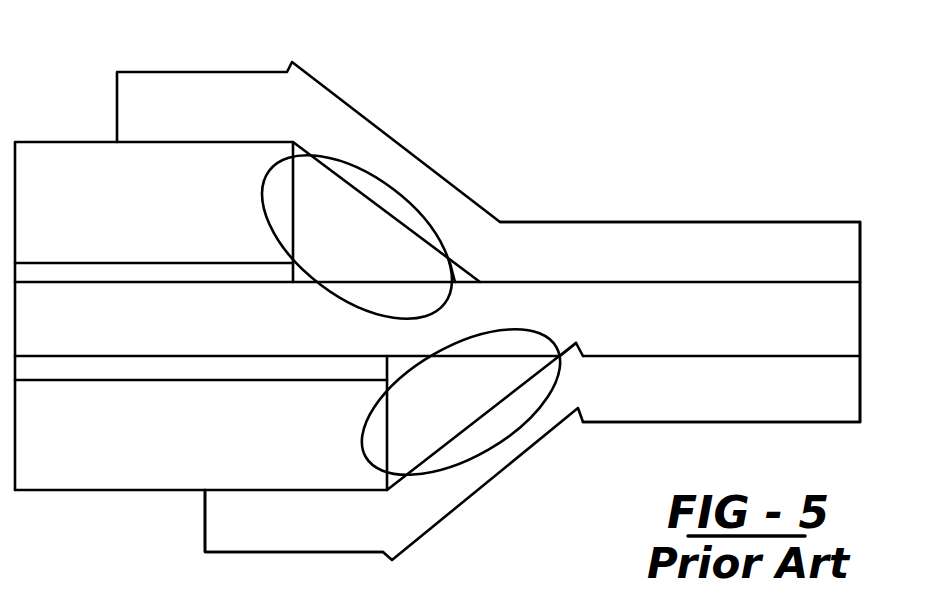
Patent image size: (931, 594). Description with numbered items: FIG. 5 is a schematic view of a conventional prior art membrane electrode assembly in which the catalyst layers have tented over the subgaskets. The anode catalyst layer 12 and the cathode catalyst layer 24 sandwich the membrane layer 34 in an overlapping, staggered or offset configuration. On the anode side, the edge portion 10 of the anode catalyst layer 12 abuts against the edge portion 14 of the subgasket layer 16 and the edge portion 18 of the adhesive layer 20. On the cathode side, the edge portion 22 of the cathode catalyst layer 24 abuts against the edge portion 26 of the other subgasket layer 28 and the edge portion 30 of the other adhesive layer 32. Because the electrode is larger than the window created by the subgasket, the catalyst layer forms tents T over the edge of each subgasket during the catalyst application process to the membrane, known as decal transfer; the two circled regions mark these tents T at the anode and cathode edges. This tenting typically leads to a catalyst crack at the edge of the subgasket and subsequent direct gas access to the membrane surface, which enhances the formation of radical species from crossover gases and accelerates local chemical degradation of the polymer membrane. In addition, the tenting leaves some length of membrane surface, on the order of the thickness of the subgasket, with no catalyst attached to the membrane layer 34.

The edge portion of the anode catalyst layer 10 is at (117, 93).
The anode catalyst layer 12 is at (682, 230).
The edge portion of the subgasket layer 14 is at (292, 192).
The subgasket layer 16 is at (62, 160).
The edge portion of the adhesive layer 18 is at (290, 272).
The adhesive layer 20 is at (100, 273).
The edge portion of the cathode catalyst layer 22 is at (203, 522).
The cathode catalyst layer 24 is at (808, 407).
The edge portion of the other subgasket layer 26 is at (387, 443).
The other subgasket layer 28 is at (125, 470).
The edge portion of the other adhesive layer 30 is at (387, 369).
The other adhesive layer 32 is at (108, 365).
The membrane layer 34 is at (797, 310).
The tents T is at (377, 233).